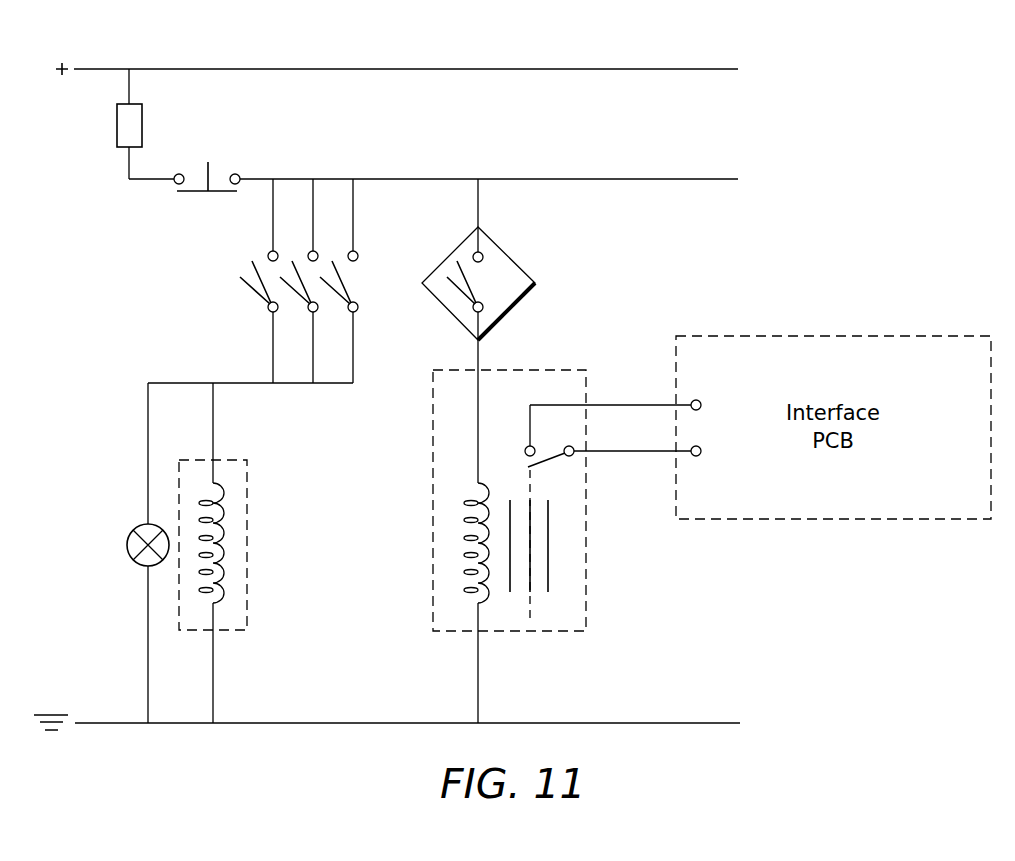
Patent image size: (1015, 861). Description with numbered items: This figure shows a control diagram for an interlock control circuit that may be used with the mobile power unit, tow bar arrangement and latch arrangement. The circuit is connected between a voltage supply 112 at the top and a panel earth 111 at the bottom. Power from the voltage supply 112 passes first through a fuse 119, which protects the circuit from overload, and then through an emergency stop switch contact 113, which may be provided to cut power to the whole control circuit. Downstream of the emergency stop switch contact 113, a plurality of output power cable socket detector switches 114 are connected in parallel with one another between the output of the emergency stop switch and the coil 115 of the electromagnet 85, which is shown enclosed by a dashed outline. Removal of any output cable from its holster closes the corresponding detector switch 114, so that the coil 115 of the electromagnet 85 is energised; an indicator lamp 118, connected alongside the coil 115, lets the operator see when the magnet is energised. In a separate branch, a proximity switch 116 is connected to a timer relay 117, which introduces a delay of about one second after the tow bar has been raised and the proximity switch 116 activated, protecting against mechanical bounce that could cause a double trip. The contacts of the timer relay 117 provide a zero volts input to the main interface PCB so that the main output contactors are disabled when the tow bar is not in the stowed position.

The voltage supply 112 is at (744, 70).
The fuse 119 is at (142, 128).
The emergency stop switch contact 113 is at (208, 162).
The output power cable socket detector switches 114 is at (238, 257).
The proximity switch 116 is at (507, 252).
The timer relay 117 is at (586, 631).
The electromagnet 85 is at (258, 450).
The coil 115 is at (223, 543).
The indicator lamp 118 is at (127, 547).
The panel earth 111 is at (744, 724).